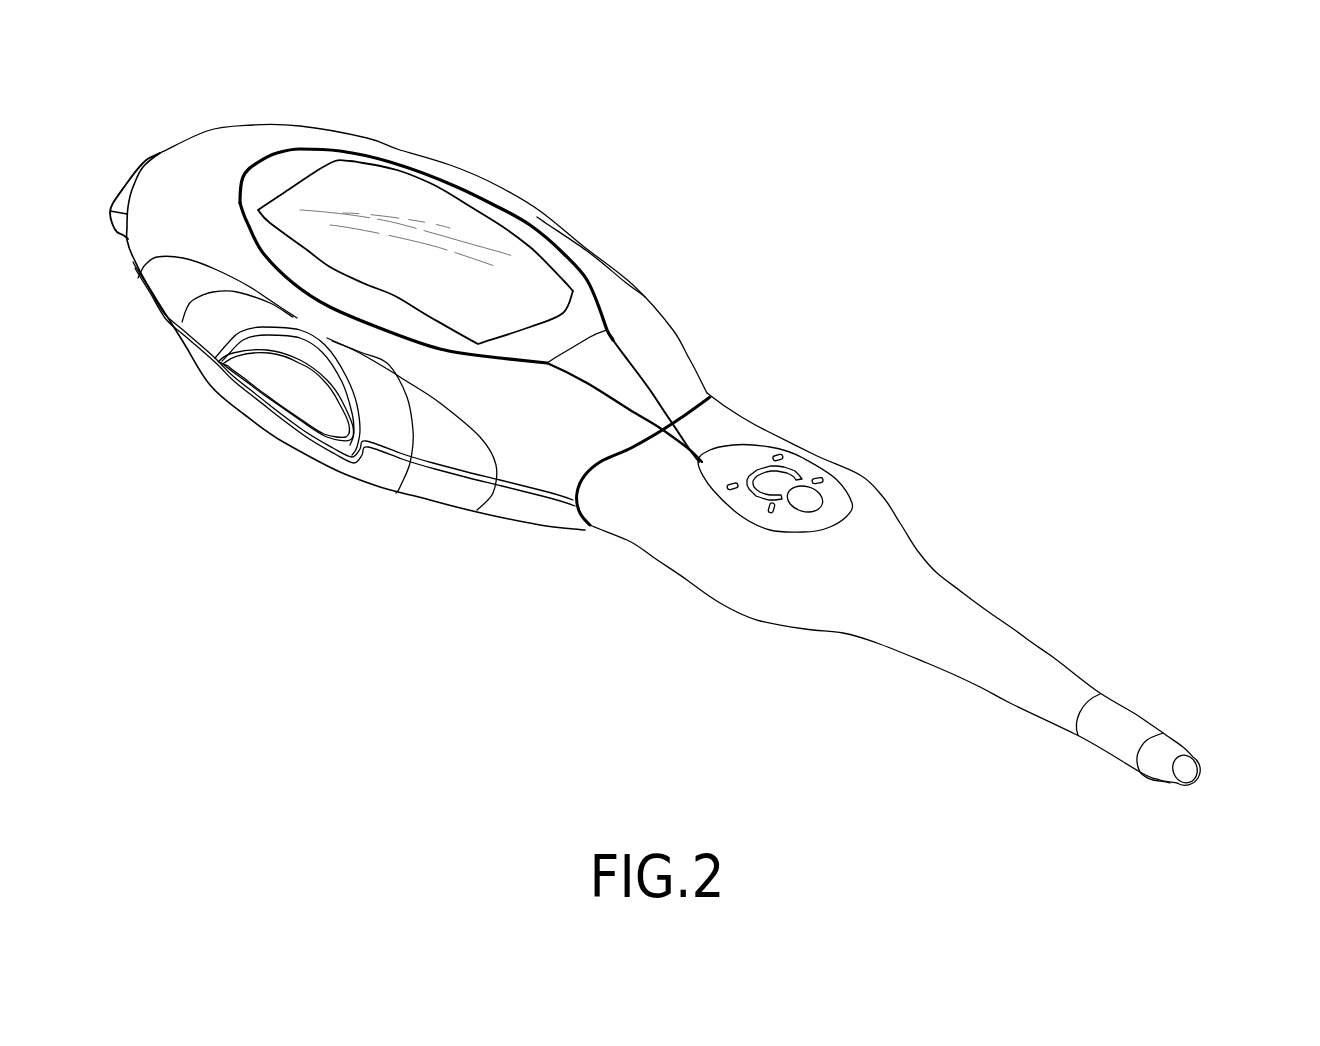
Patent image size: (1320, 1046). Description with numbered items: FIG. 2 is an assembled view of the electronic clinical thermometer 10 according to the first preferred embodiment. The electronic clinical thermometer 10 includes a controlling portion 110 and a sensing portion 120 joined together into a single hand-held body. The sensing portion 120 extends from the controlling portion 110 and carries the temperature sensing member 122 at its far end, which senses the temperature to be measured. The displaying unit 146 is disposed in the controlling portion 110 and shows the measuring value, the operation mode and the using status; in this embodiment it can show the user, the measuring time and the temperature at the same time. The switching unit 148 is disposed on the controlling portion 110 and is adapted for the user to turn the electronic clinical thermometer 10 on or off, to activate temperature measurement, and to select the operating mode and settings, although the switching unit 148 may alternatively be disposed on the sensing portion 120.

The electronic clinical thermometer 10 is at (642, 43).
The controlling portion 110 is at (523, 200).
The sensing portion 120 is at (867, 478).
The temperature sensing member 122 is at (1137, 720).
The displaying unit 146 is at (413, 217).
The switching unit 148 is at (297, 390).